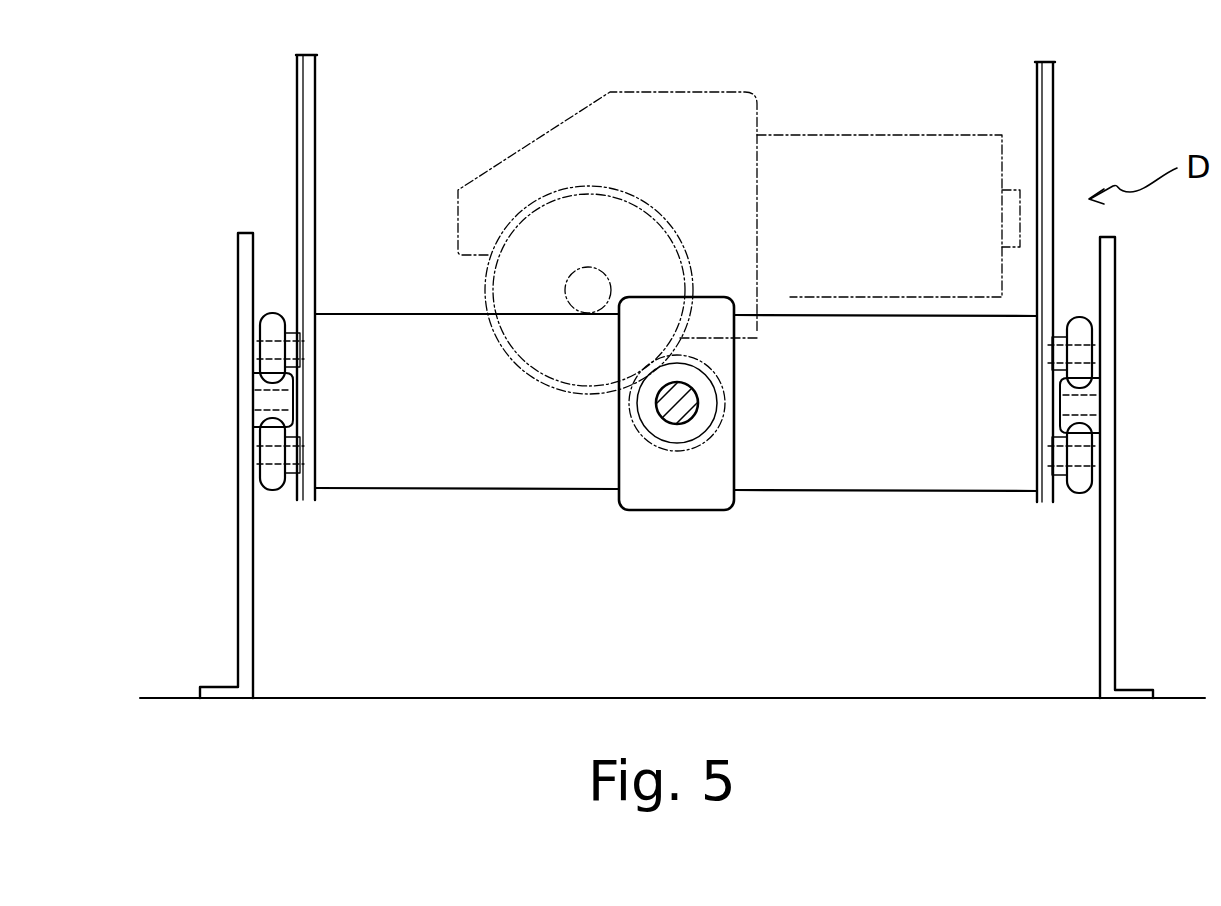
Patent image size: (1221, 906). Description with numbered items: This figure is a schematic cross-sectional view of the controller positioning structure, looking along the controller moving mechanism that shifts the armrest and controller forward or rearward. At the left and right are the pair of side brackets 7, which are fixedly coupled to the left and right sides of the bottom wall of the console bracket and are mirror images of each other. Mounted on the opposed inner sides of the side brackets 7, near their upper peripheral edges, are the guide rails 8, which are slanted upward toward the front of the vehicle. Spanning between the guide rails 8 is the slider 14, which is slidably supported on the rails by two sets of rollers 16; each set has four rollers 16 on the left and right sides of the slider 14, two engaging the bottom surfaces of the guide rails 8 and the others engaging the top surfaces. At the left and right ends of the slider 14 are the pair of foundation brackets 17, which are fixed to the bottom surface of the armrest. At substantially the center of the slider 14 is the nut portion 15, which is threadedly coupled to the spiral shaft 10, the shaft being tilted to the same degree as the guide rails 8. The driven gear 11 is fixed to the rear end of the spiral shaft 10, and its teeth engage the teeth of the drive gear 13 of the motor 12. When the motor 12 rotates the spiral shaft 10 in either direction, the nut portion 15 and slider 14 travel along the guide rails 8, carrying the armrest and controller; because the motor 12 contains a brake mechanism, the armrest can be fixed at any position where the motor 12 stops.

The side brackets 7 is at (240, 618).
The guide rails 8 is at (262, 403).
The spiral shaft 10 is at (673, 424).
The driven gear 11 is at (631, 424).
The motor 12 is at (843, 133).
The drive gear 13 is at (487, 292).
The slider 14 is at (888, 490).
The nut portion 15 is at (727, 460).
The rollers 16 is at (268, 318).
The foundation brackets 17 is at (301, 108).